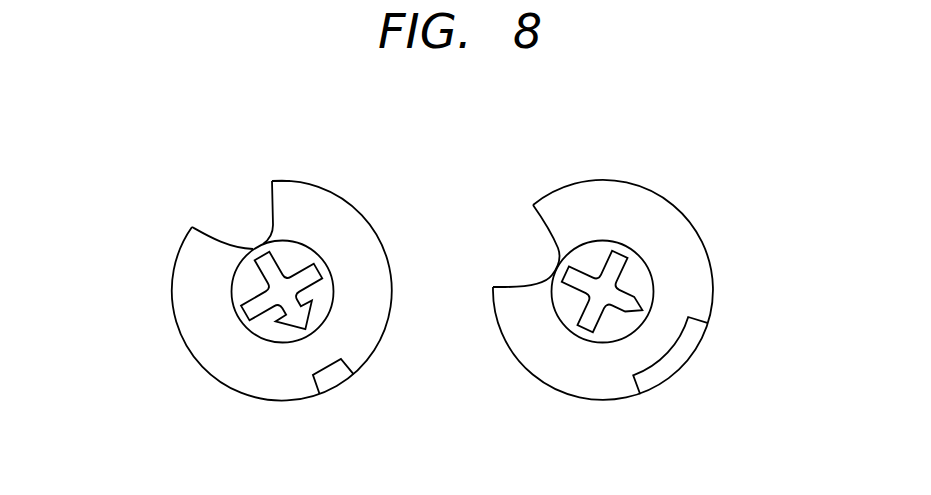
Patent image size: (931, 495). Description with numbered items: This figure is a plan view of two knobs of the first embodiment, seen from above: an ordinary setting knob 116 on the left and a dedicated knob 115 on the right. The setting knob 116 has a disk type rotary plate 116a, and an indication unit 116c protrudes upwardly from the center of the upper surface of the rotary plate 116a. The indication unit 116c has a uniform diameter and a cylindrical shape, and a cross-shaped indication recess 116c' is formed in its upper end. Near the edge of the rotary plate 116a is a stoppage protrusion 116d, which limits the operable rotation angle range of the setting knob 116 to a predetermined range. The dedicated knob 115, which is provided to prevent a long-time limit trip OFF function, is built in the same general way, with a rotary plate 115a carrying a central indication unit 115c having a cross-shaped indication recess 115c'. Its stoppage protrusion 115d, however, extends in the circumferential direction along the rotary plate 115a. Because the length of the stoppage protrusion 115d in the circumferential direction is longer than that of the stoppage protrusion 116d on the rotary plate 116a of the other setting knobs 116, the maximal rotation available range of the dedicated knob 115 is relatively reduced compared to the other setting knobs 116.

The dedicated knob 115 is at (526, 390).
The rotary plate 115a is at (703, 250).
The indication unit 115c is at (603, 237).
The indication recess 115c' is at (617, 238).
The stoppage protrusion 115d is at (682, 353).
The setting knob 116 is at (175, 360).
The rotary plate 116a is at (177, 259).
The indication unit 116c is at (285, 239).
The indication recess 116c' is at (323, 255).
The stoppage protrusion 116d is at (333, 377).